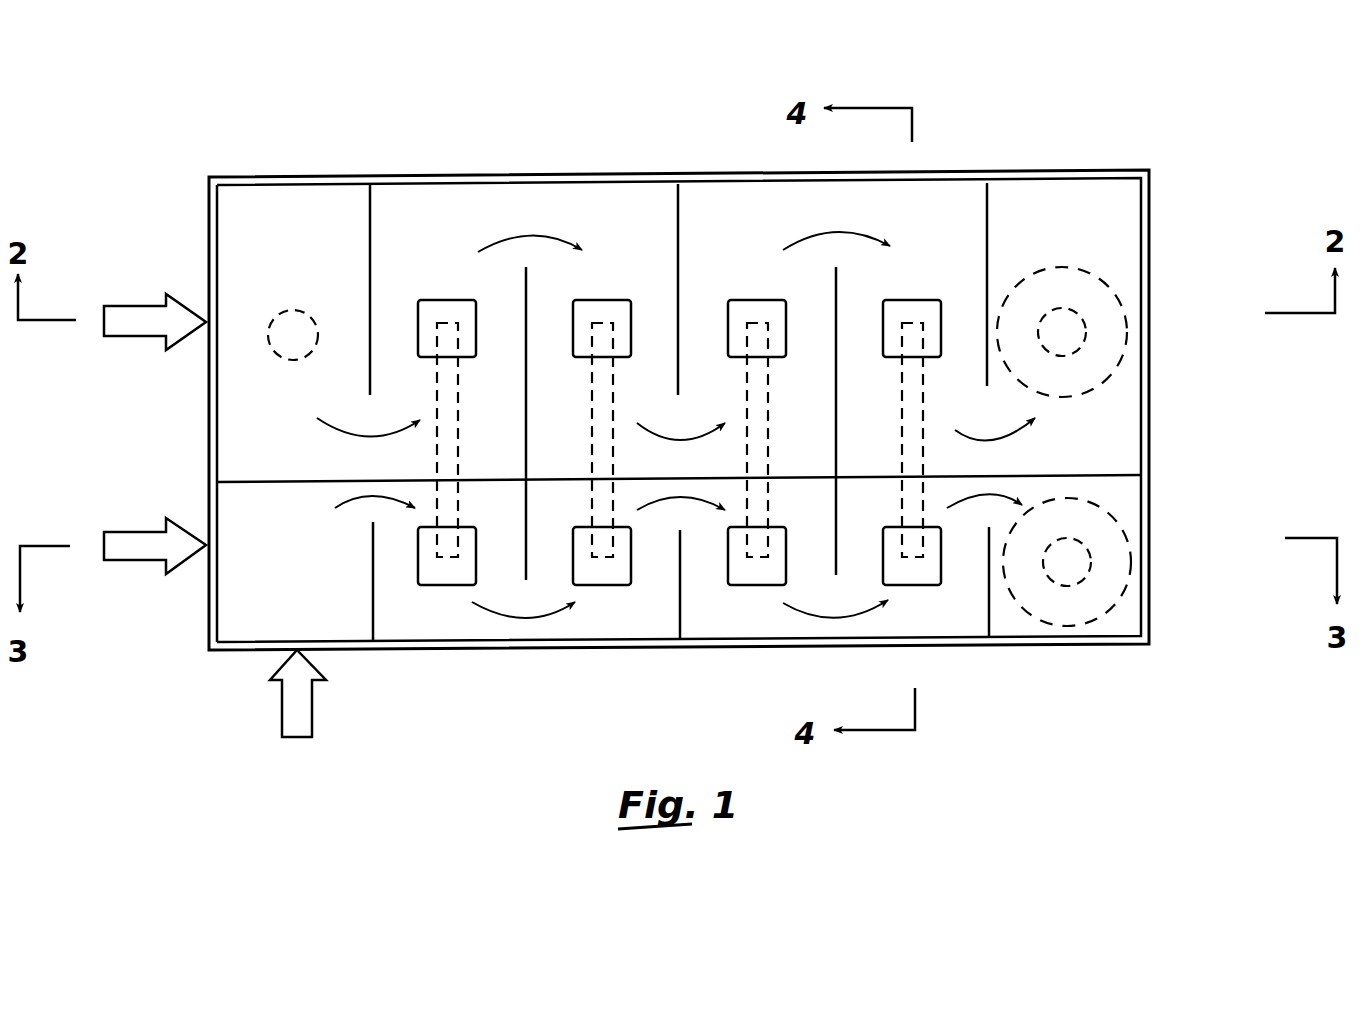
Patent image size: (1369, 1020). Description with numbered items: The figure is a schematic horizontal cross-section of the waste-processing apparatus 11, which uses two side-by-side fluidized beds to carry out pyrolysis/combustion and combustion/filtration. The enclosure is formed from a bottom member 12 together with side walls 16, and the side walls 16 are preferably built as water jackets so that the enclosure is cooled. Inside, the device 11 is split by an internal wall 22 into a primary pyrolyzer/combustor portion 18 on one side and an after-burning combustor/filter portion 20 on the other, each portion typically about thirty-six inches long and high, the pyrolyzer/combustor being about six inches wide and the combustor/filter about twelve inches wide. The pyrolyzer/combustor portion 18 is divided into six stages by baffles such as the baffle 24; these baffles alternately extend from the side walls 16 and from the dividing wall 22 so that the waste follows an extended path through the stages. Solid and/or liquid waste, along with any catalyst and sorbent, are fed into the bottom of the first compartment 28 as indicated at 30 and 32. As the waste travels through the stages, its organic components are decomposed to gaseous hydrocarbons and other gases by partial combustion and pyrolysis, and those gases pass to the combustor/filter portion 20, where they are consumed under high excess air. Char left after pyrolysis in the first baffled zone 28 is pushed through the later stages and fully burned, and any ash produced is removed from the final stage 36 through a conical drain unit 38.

The apparatus 11 is at (1182, 692).
The bottom member 12 is at (643, 240).
The side walls 16 is at (1150, 408).
The primary pyrolyzer/combustor portion 18 is at (206, 496).
The after-burning combustor/filter portion 20 is at (206, 203).
The internal wall 22 is at (298, 483).
The baffle 24 is at (372, 572).
The first compartment 28 is at (250, 607).
The feed input 30 is at (116, 528).
The feed input 32 is at (312, 713).
The final stage 36 is at (1099, 630).
The conical drain unit 38 is at (1127, 528).